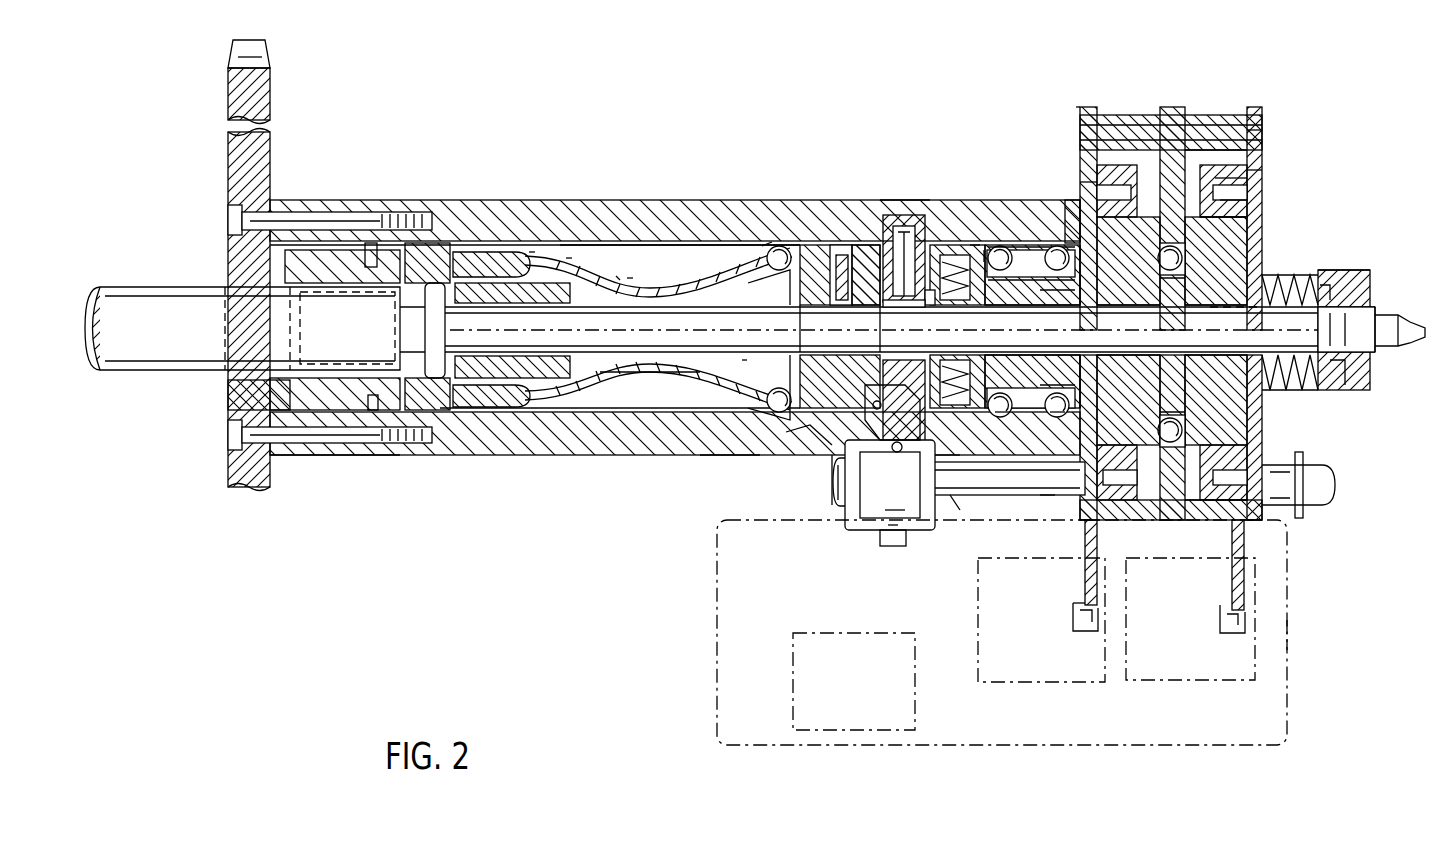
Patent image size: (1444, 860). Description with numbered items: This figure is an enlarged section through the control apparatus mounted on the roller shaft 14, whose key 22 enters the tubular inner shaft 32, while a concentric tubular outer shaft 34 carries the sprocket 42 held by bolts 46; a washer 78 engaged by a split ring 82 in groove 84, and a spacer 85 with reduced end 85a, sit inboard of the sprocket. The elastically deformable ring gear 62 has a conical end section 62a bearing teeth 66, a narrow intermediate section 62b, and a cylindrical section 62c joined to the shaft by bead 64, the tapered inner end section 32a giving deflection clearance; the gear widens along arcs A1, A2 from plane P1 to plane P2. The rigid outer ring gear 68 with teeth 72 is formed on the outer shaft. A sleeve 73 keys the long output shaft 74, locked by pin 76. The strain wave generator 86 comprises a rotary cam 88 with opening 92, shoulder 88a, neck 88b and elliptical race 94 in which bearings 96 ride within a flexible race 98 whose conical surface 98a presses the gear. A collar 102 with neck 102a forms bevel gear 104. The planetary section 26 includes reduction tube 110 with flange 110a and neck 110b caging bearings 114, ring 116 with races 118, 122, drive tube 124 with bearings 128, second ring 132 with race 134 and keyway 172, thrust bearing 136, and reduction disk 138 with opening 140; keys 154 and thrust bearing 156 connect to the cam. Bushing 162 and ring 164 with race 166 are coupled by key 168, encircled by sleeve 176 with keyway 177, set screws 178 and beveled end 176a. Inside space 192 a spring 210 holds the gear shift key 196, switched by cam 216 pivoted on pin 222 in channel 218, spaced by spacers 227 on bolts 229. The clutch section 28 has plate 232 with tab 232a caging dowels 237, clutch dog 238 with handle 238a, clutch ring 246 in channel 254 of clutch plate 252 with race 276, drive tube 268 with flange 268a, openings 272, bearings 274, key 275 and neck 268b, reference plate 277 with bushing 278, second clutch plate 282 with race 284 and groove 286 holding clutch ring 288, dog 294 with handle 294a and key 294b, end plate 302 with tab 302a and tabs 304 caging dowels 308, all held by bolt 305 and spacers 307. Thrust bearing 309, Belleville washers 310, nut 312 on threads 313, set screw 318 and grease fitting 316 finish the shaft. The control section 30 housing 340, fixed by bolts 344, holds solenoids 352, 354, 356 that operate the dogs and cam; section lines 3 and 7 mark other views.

The shaft 14 is at (160, 296).
The key 22 is at (364, 290).
The planetary section 26 is at (896, 162).
The clutch section 28 is at (1078, 105).
The control section 30 is at (692, 569).
The tubular inner shaft 32 is at (368, 455).
The inner end section 32a is at (634, 376).
The tubular outer shaft 34 is at (466, 205).
The sprocket 42 is at (242, 106).
The bolts 46 is at (232, 216).
The elastically deformable ring gear 62 is at (650, 373).
The end section 62a is at (764, 246).
The intermediate section 62b is at (650, 255).
The cylindrical section 62c is at (493, 250).
The circumferential bead 64 is at (431, 245).
The teeth 66 is at (684, 250).
The rigid outer ring gear 68 is at (704, 455).
The gear teeth 72 is at (786, 432).
The sleeve 73 is at (565, 380).
The shaft 74 is at (606, 311).
The pin 76 is at (446, 300).
The washer 78 is at (393, 228).
The split ring 82 is at (377, 257).
The external circular groove 84 is at (368, 262).
The spacer 85 is at (310, 458).
The reduced diameter end 85a is at (270, 403).
The strain wave generator 86 is at (740, 363).
The rotary cam 88 is at (790, 246).
The shoulder 88a is at (834, 480).
The reduced diameter neck 88b is at (890, 342).
The central opening 92 is at (768, 312).
The elliptical bearing race 94 is at (748, 286).
The bearings 96 is at (768, 406).
The flexible outer bearing race 98 is at (769, 411).
The conical outer surface 98a is at (768, 250).
The circular collar 102 is at (854, 243).
The reduced diameter neck 102a is at (837, 242).
The female bevel gear 104 is at (889, 218).
The reduction tube 110 is at (1034, 306).
The radial flange 110a is at (1129, 306).
The reduced diameter neck 110b is at (967, 478).
The ball bearings 114 is at (1070, 243).
The circular ring 116 is at (1003, 418).
The circular race 118 is at (1060, 420).
The circular race 122 is at (948, 456).
The drive tube 124 is at (1001, 306).
The ball bearings 128 is at (1001, 246).
The second ring 132 is at (992, 243).
The circular bearing race 134 is at (997, 243).
The thrust bearing 136 is at (958, 512).
The reduction disk 138 is at (937, 243).
The inner opening 140 is at (937, 296).
The keys 154 is at (800, 318).
The thrust bearing 156 is at (844, 243).
The bushing 162 is at (1094, 306).
The circular ring 164 is at (1057, 243).
The circular bearing race 166 is at (1062, 243).
The key 168 is at (1174, 306).
The keyway 172 is at (999, 243).
The sleeve 176 is at (963, 255).
The end 176a is at (987, 250).
The internal keyway 177 is at (975, 243).
The set screws 178 is at (1051, 243).
The annular space 192 is at (897, 226).
The gear shift key 196 is at (860, 482).
The circular spring 210 is at (902, 306).
The cam 216 is at (897, 516).
The channel 218 is at (893, 536).
The pivot pin 222 is at (886, 536).
The spacers 227 is at (1048, 500).
The bolts 229 is at (838, 486).
The annular plate 232 is at (1088, 107).
The horizontal tab 232a is at (1262, 528).
The dowel 237 is at (1080, 182).
The clutch dog 238 is at (1113, 185).
The handle 238a is at (1084, 596).
The clutch ring 246 is at (1143, 200).
The clutch plate 252 is at (1138, 521).
The annular channel 254 is at (1088, 562).
The drive tube 268 is at (1252, 435).
The radial flange 268a is at (1304, 471).
The reduced diameter neck portion 268b is at (1262, 380).
The openings 272 is at (1288, 306).
The ball bearings 274 is at (1187, 262).
The key 275 is at (1218, 312).
The circular race 276 is at (1143, 415).
The reference plate 277 is at (1170, 107).
The brass bushing 278 is at (1174, 107).
The second clutch plate 282 is at (1213, 165).
The circular race 284 is at (1243, 240).
The circular groove 286 is at (1262, 136).
The clutch ring 288 is at (1250, 214).
The dog 294 is at (1250, 178).
The handle 294a is at (1232, 580).
The key 294b is at (1302, 496).
The end plate 302 is at (1259, 115).
The tab 302a is at (1165, 560).
The tabs 304 is at (1257, 181).
The bolt 305 is at (1074, 200).
The spacers 307 is at (1247, 140).
The dowels 308 is at (1247, 196).
The thrust bearing 309 is at (1183, 280).
The Belleville washers 310 is at (1328, 286).
The threaded nut 312 is at (1361, 272).
The threads 313 is at (1367, 300).
The grease fitting 316 is at (1410, 325).
The set screw 318 is at (1347, 385).
The housing 340 is at (1288, 634).
The bolts 344 is at (1208, 521).
The solenoid 352 is at (1159, 682).
The solenoid 354 is at (1012, 682).
The solenoid 356 is at (792, 689).
The section line 3 is at (805, 178).
The section line 7 is at (932, 182).
The circular arc A1 is at (616, 276).
The circular arc A2 is at (570, 258).
The medial plane P1 is at (630, 278).
The medial plane P2 is at (532, 250).